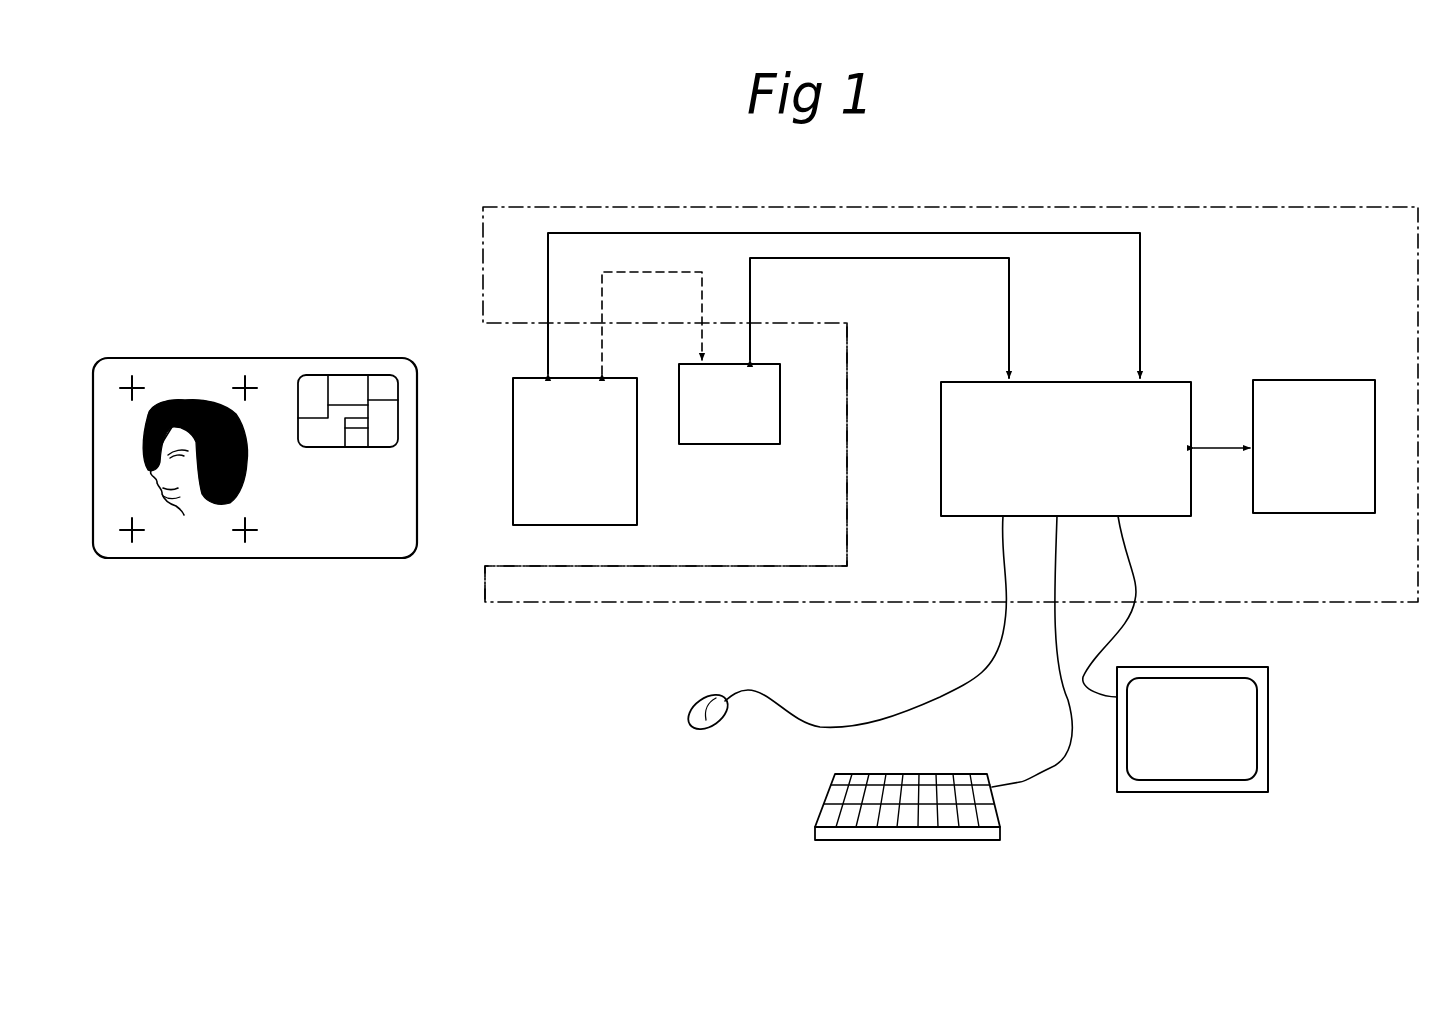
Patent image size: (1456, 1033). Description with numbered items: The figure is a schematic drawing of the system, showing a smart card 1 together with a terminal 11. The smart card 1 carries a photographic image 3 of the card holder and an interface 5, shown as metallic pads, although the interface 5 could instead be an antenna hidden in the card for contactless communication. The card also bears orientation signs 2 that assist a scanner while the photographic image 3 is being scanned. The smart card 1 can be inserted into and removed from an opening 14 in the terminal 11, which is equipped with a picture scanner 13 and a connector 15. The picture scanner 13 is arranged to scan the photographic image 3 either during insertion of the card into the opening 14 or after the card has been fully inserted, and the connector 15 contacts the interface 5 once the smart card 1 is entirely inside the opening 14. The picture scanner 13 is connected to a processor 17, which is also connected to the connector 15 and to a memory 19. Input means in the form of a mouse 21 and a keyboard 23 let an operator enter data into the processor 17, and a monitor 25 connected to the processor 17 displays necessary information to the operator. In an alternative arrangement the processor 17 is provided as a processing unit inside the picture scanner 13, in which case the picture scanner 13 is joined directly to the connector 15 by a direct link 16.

The smart card 1 is at (312, 586).
The orientation signs 2 is at (134, 388).
The photographic image 3 is at (218, 393).
The interface 5 is at (353, 388).
The terminal 11 is at (483, 210).
The picture scanner 13 is at (532, 435).
The opening 14 is at (538, 565).
The connector 15 is at (742, 432).
The direct link 16 is at (683, 275).
The processor 17 is at (1163, 400).
The memory 19 is at (1313, 407).
The mouse 21 is at (690, 720).
The keyboard 23 is at (948, 788).
The monitor 25 is at (1243, 729).